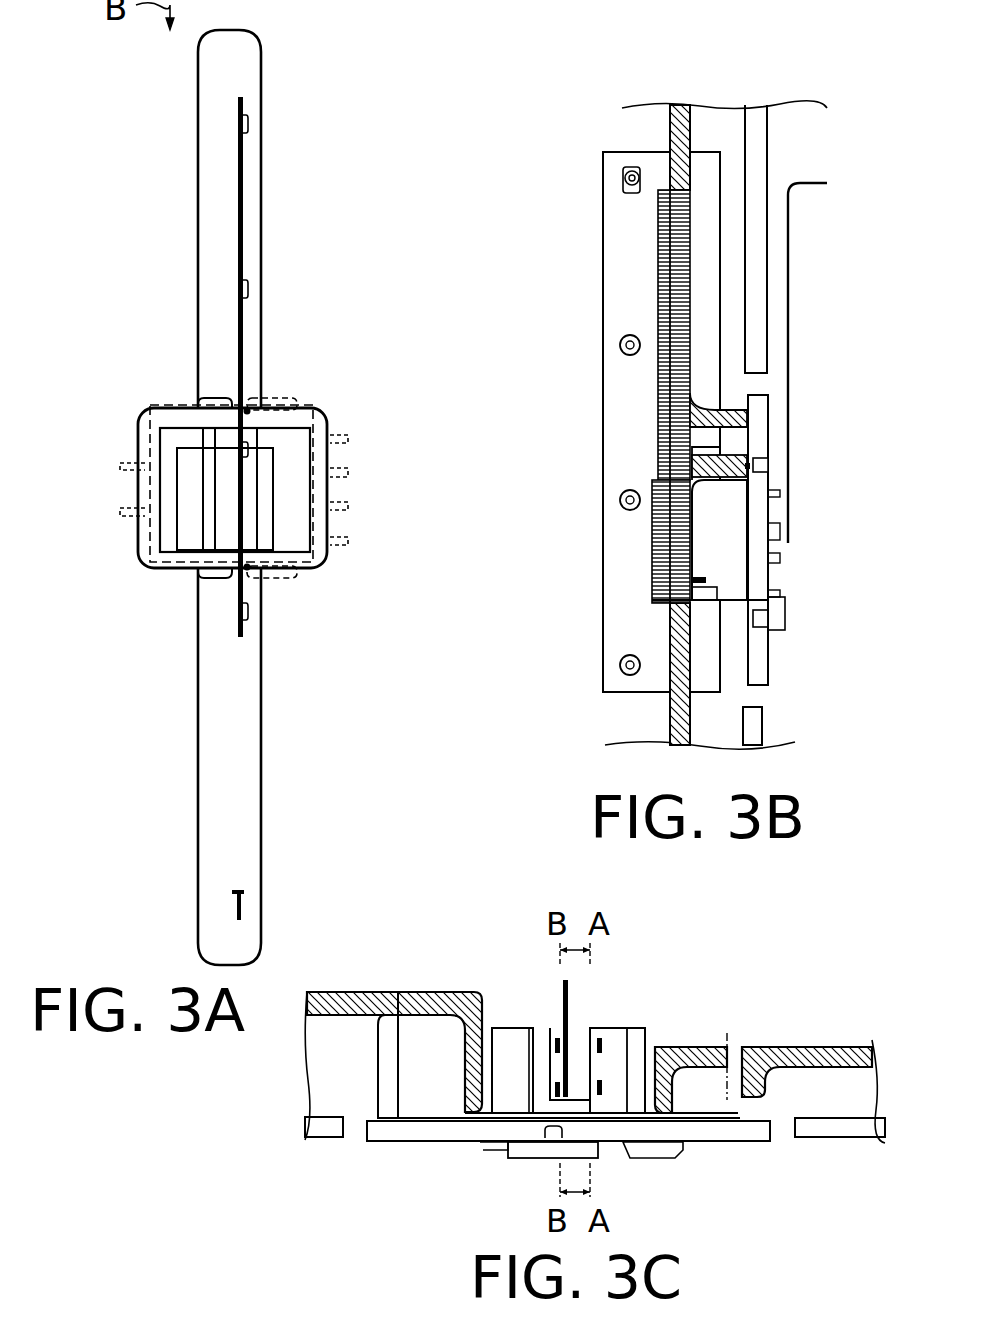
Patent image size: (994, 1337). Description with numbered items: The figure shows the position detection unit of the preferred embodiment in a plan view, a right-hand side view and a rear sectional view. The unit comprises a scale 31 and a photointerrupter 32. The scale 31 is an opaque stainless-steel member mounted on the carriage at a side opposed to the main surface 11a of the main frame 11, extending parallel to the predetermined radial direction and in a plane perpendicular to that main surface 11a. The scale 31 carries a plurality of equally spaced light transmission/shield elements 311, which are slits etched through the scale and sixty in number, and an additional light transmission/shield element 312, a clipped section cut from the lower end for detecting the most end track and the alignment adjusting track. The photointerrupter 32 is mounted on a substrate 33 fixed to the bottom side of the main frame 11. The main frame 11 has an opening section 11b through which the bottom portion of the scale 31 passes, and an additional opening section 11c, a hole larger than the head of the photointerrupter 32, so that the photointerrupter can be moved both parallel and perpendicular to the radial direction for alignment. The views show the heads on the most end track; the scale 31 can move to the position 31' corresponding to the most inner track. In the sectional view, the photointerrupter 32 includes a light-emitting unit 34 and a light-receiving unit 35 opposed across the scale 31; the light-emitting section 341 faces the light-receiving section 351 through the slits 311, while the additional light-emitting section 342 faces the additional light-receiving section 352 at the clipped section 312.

In FIG. 3A, the main frame 11 is at (173, 365).
In FIG. 3B, the main frame 11 is at (666, 716).
In FIG. 3C, the main frame 11 is at (366, 992).
In FIG. 3A, the main surface 11a is at (247, 738).
In FIG. 3A, the opening section 11b is at (234, 62).
In FIG. 3C, the opening section 11b is at (650, 1066).
In FIG. 3A, the additional opening section 11c is at (313, 559).
In FIG. 3A, the scale 31 is at (285, 367).
In FIG. 3B, the scale 31 is at (631, 422).
In FIG. 3A, the scale position 31' is at (279, 898).
In FIG. 3B, the light transmission/shield elements 311 is at (664, 190).
In FIG. 3B, the additional light transmission/shield element 312 is at (702, 500).
In FIG. 3A, the photointerrupter 32 is at (297, 495).
In FIG. 3B, the photointerrupter 32 is at (736, 525).
In FIG. 3A, the substrate 33 is at (142, 445).
In FIG. 3B, the substrate 33 is at (762, 645).
In FIG. 3C, the substrate 33 is at (403, 1142).
In FIG. 3A, the light-emitting unit 34 is at (197, 500).
In FIG. 3C, the light-emitting unit 34 is at (652, 1065).
In FIG. 3C, the light-emitting section 341 is at (620, 1060).
In FIG. 3C, the additional light-emitting section 342 is at (600, 1096).
In FIG. 3A, the light-receiving unit 35 is at (273, 462).
In FIG. 3C, the light-receiving unit 35 is at (550, 1045).
In FIG. 3C, the light-receiving section 351 is at (540, 1040).
In FIG. 3B, the additional light-receiving section 352 is at (708, 573).
In FIG. 3C, the additional light-receiving section 352 is at (548, 1092).